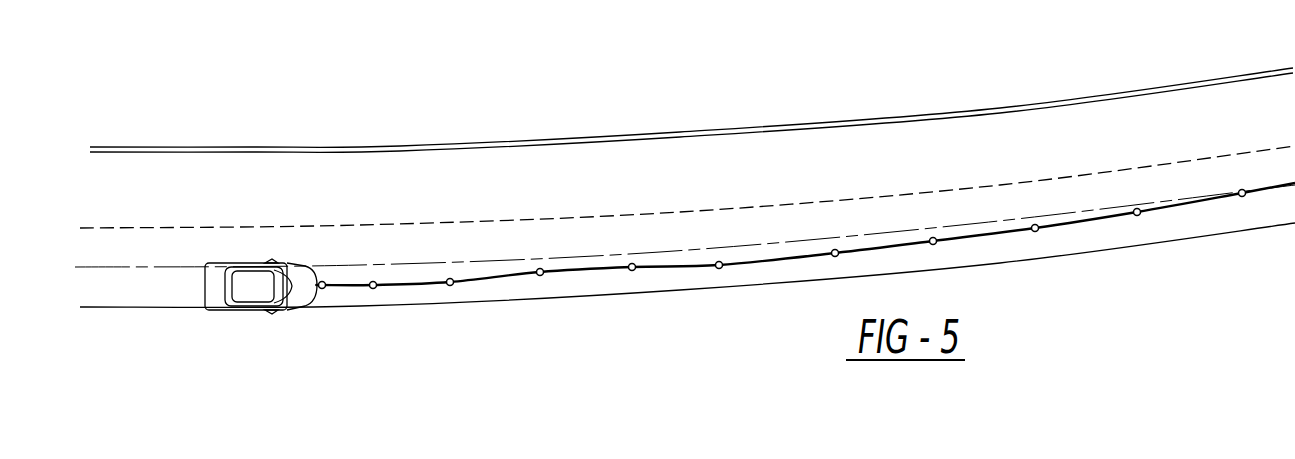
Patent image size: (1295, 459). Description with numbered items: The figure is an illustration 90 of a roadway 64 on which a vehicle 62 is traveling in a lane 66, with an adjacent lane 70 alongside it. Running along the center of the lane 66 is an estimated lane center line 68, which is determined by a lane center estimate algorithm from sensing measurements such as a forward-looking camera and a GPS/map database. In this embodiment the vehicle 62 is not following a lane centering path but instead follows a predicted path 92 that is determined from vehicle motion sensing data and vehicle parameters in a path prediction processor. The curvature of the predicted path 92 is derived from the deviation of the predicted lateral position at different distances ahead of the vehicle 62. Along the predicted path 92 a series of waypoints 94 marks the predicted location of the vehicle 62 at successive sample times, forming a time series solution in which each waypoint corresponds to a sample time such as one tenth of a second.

The vehicle 62 is at (255, 287).
The roadway 64 is at (414, 146).
The lane 66 is at (121, 288).
The lane center line 68 is at (388, 262).
The adjacent lane 70 is at (112, 175).
The illustration 90 is at (733, 100).
The predicted path 92 is at (592, 275).
The waypoints 94 is at (540, 276).